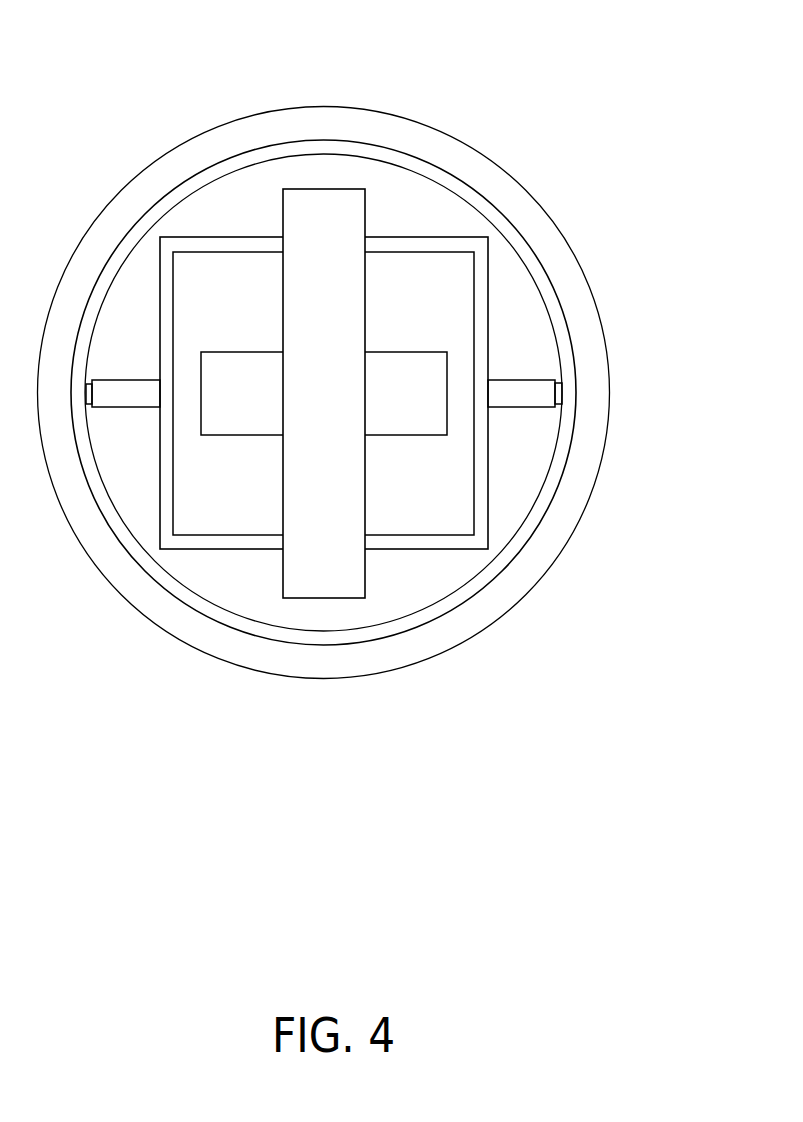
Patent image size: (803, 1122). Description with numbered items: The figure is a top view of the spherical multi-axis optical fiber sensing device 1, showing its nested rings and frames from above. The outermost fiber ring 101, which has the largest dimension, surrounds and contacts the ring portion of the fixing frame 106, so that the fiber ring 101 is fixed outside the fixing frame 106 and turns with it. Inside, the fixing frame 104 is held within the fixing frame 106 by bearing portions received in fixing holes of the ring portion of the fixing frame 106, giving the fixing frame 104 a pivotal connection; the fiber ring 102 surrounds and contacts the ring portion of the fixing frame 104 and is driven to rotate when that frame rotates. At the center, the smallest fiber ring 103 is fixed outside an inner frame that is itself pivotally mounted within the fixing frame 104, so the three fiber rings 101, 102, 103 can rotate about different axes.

The spherical multi-axis optical fiber sensing device 1 is at (70, 83).
The fiber ring 101 is at (517, 205).
The fiber ring 102 is at (333, 225).
The fiber ring 103 is at (437, 425).
The fixing frame 104 is at (480, 313).
The fixing frame 106 is at (568, 378).